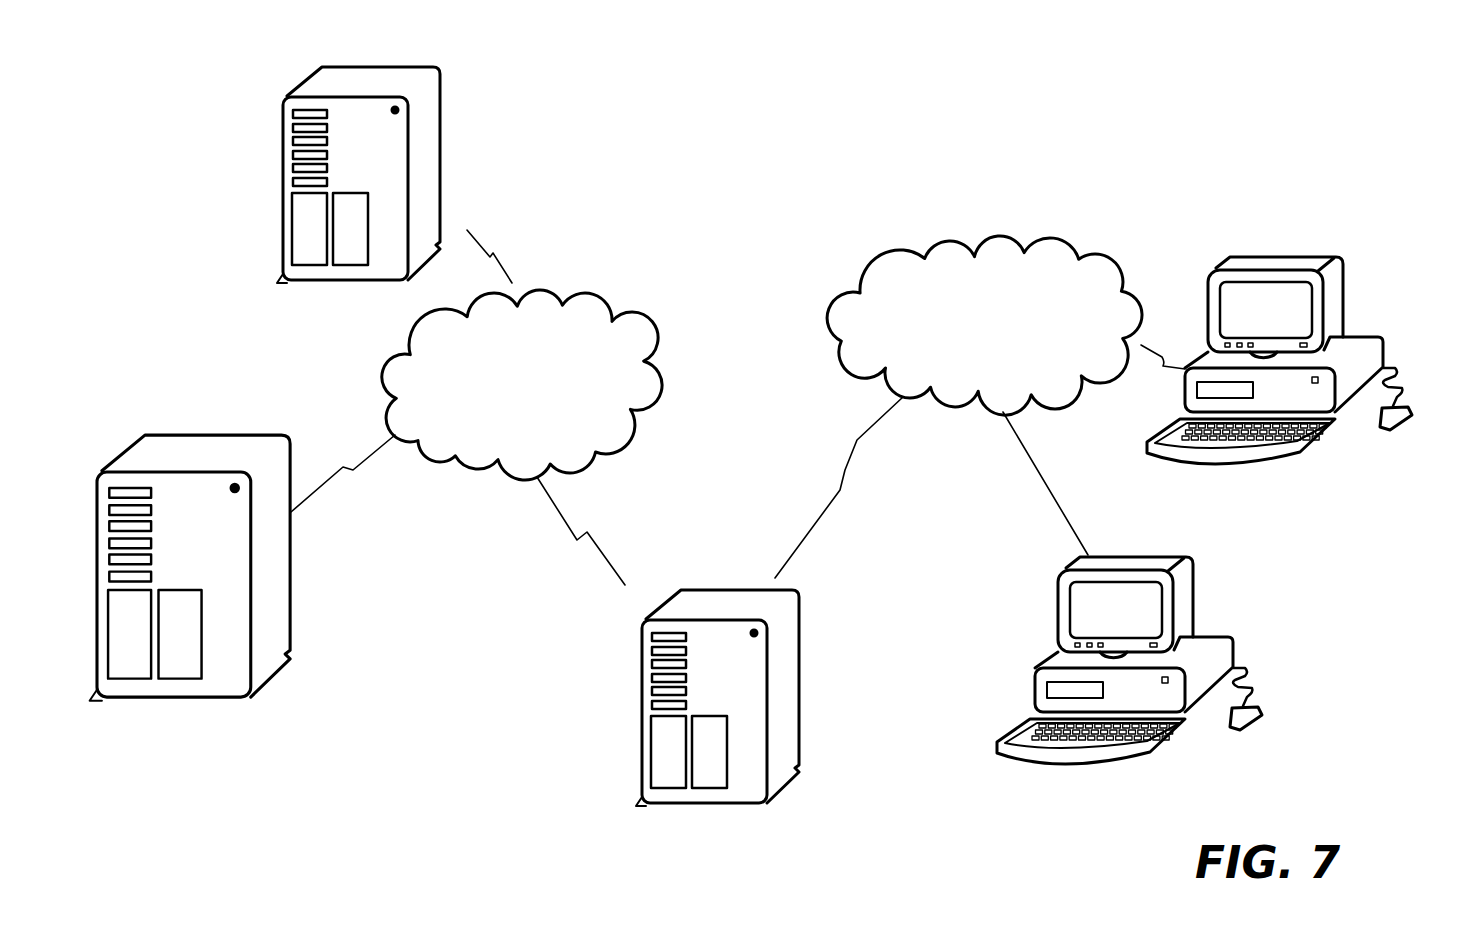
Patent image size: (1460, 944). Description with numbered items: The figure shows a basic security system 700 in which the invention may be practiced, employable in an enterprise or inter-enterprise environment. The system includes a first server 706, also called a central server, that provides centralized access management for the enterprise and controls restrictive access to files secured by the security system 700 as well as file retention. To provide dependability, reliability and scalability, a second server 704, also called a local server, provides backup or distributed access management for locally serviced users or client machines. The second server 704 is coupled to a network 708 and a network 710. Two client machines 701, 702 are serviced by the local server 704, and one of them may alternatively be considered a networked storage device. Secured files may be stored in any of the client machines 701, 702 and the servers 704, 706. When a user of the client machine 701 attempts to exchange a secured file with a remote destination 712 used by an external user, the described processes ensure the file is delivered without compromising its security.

The security system 700 is at (186, 130).
The client machine 701 is at (1237, 638).
The client machine 702 is at (1387, 338).
The second server 704 is at (700, 588).
The first server 706 is at (198, 443).
The network 708 is at (607, 313).
The network 710 is at (1000, 240).
The remote destination 712 is at (445, 163).